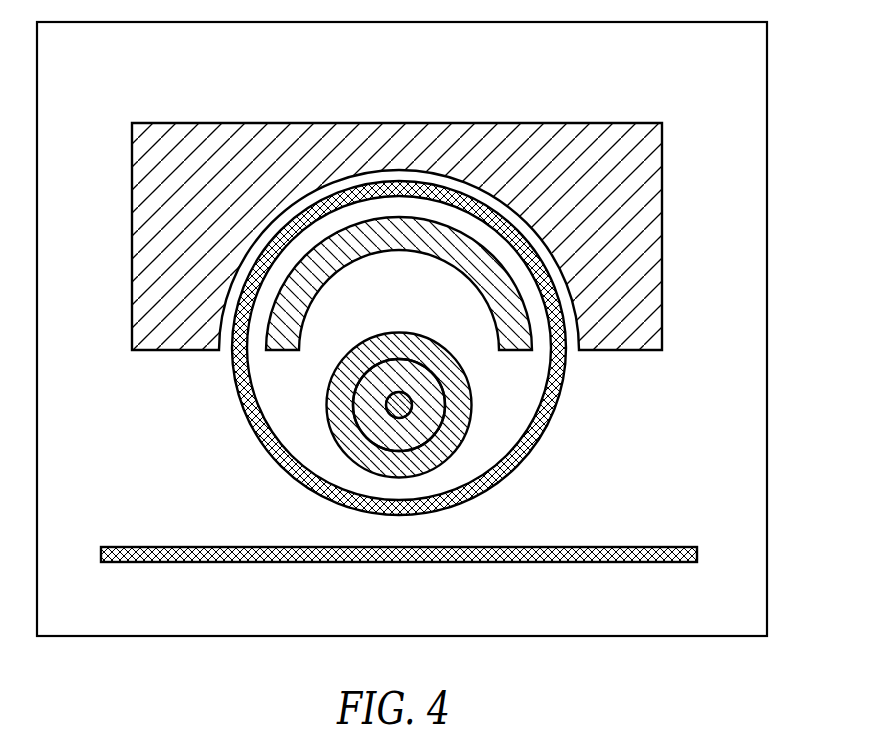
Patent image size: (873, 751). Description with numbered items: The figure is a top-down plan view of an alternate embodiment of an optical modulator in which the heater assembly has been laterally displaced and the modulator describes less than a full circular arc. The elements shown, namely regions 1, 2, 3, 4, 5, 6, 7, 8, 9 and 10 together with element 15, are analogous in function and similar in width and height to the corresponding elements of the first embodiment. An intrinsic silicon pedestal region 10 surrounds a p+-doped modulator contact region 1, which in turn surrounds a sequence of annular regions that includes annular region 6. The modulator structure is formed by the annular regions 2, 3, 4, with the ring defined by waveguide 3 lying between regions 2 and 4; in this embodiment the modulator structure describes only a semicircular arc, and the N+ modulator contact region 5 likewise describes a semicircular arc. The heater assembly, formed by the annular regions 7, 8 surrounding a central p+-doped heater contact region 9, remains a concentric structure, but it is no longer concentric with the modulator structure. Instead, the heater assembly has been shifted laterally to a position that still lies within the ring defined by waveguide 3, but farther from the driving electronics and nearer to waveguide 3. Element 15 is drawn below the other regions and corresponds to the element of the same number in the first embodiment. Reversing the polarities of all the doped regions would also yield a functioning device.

The modulator contact region 1 is at (240, 135).
The annular region of modulator structure 2 is at (458, 172).
The waveguide 3 is at (500, 215).
The annular region of modulator structure 4 is at (498, 243).
The N+ modulator contact region 5 is at (517, 303).
The annular region 6 is at (502, 407).
The heater assembly region 7 is at (328, 392).
The heater assembly region 8 is at (353, 407).
The heater contact region 9 is at (397, 405).
The intrinsic silicon pedestal region 10 is at (740, 62).
The element analogous to element of first embodiment 15 is at (177, 552).